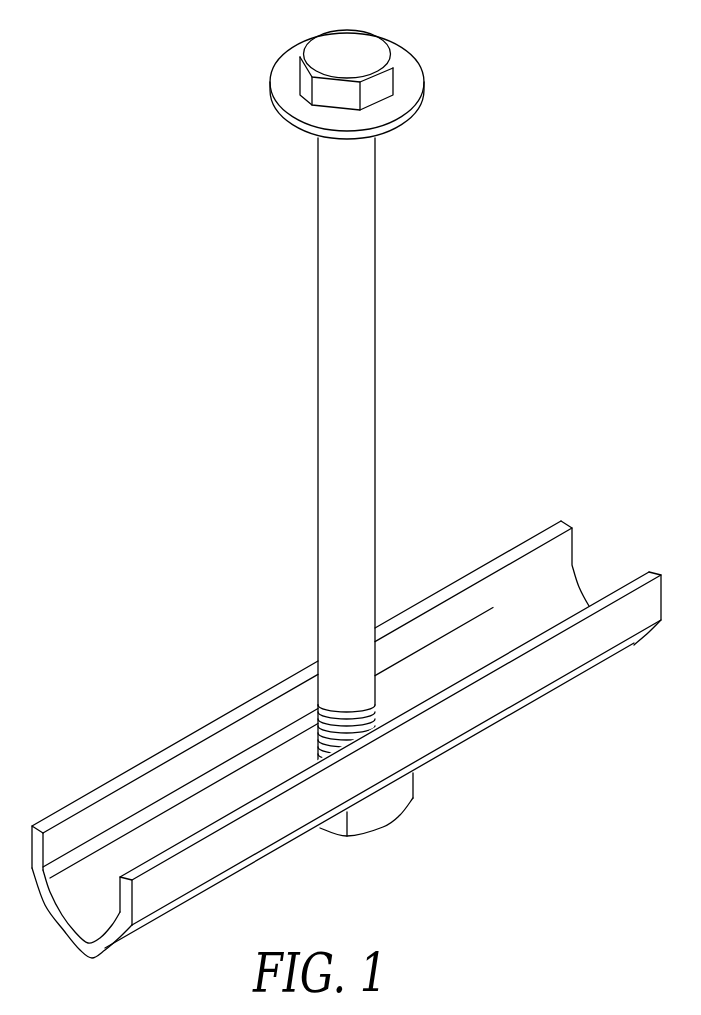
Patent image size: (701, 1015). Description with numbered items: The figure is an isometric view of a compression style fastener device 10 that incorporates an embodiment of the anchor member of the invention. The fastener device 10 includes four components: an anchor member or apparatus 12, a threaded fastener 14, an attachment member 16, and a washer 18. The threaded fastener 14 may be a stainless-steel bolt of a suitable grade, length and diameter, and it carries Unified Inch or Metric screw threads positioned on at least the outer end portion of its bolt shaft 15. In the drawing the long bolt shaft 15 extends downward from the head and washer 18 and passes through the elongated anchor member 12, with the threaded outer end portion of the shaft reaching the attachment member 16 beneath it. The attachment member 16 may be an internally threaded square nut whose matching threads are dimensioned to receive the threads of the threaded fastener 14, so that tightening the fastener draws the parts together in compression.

The fastener device 10 is at (89, 240).
The anchor member 12 is at (557, 678).
The threaded fastener 14 is at (361, 322).
The bolt shaft 15 is at (318, 736).
The attachment member 16 is at (385, 807).
The washer 18 is at (407, 75).